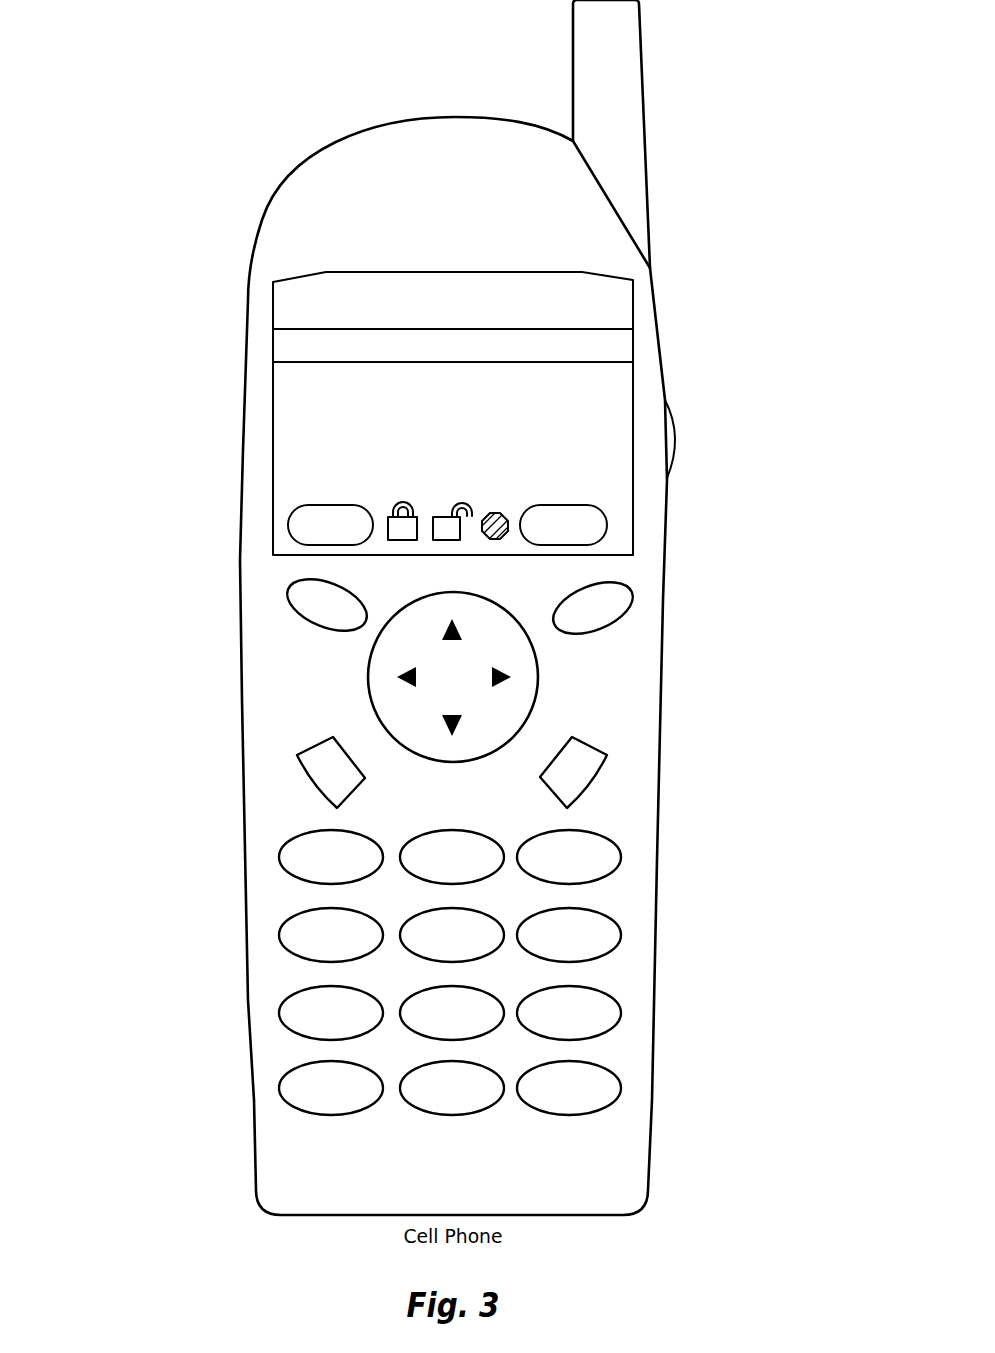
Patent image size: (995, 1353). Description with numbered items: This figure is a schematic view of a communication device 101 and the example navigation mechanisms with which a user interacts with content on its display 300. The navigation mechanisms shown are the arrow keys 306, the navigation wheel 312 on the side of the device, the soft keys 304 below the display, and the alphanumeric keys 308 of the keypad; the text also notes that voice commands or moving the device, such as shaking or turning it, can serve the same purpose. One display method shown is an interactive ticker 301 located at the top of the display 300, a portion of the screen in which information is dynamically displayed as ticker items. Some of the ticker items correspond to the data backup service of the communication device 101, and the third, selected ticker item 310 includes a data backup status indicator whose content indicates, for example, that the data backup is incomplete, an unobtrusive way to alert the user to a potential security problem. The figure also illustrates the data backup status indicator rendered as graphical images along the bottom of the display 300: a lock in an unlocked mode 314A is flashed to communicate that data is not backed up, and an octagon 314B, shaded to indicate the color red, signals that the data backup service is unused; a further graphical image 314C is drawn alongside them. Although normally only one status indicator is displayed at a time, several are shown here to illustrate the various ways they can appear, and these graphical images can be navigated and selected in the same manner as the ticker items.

The communication device 101 is at (281, 152).
The display 300 is at (290, 410).
The interactive ticker 301 is at (282, 352).
The soft keys 304 is at (287, 523).
The arrow keys 306 is at (537, 683).
The alphanumeric keys 308 is at (622, 857).
The ticker item 310 is at (626, 347).
The navigation wheel 312 is at (675, 433).
The lock in unlocked mode 314A is at (400, 500).
The octagon 314B is at (443, 520).
The stop icon 314C is at (494, 512).